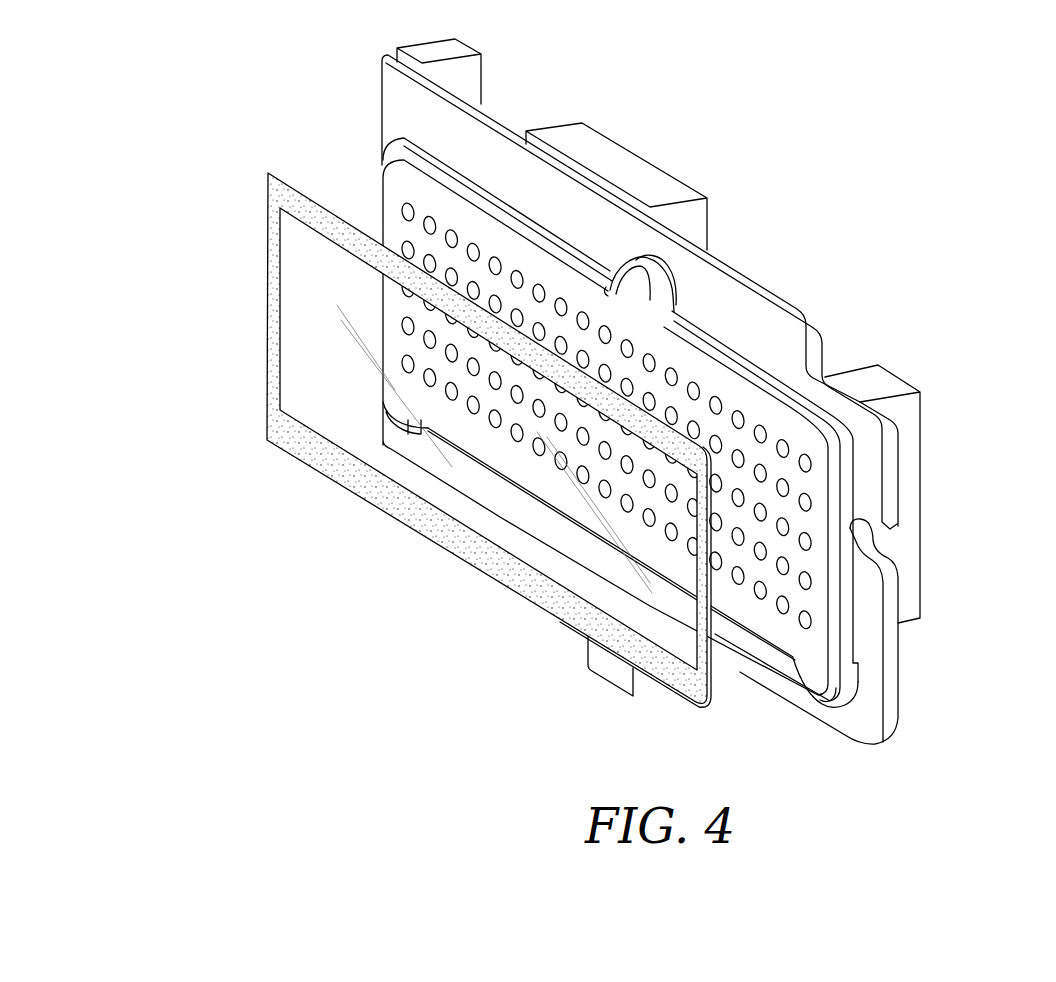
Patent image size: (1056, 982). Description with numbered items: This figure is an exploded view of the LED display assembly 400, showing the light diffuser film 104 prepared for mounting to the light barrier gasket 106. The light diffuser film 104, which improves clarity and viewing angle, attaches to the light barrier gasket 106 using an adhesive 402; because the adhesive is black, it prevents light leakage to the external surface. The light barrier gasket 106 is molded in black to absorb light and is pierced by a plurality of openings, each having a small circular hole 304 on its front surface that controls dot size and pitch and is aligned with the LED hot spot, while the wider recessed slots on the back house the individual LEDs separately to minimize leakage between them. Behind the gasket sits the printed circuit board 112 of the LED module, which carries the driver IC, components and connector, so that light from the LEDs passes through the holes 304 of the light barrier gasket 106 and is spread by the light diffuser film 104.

The lighting assembly 400 is at (623, 413).
The light diffuser film 104 is at (457, 422).
The light barrier gasket 106 is at (830, 458).
The printed circuit board 112 is at (808, 316).
The hole 304 is at (806, 630).
The adhesive 402 is at (284, 190).